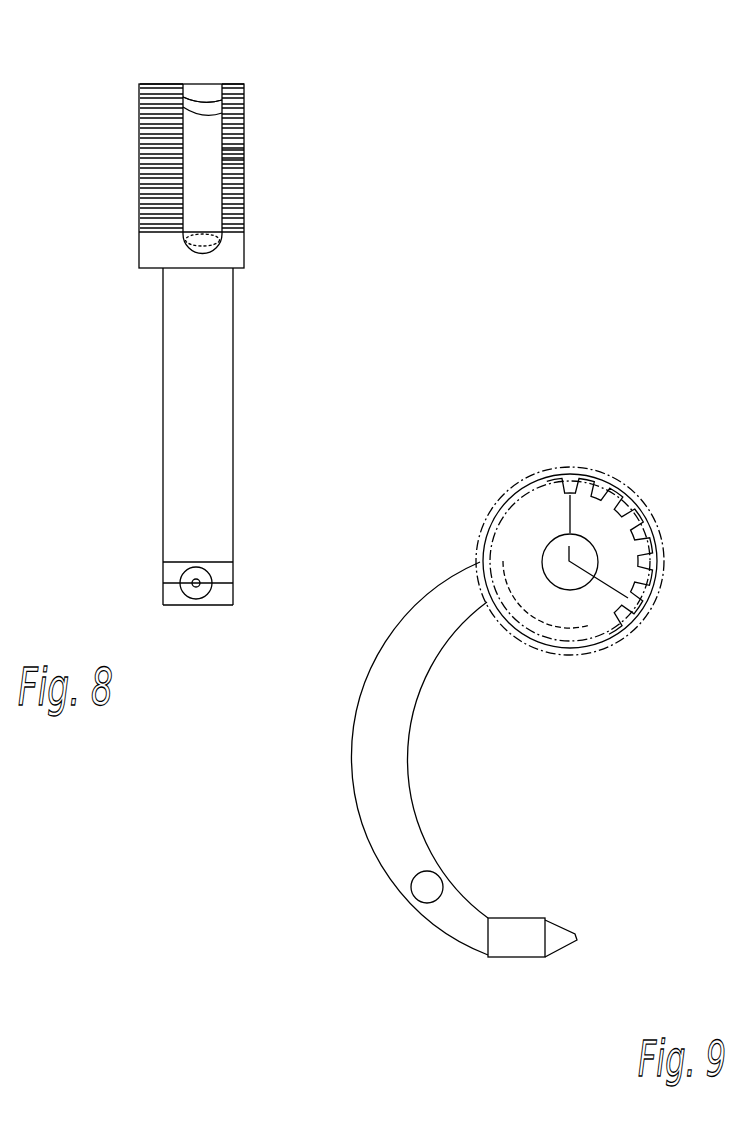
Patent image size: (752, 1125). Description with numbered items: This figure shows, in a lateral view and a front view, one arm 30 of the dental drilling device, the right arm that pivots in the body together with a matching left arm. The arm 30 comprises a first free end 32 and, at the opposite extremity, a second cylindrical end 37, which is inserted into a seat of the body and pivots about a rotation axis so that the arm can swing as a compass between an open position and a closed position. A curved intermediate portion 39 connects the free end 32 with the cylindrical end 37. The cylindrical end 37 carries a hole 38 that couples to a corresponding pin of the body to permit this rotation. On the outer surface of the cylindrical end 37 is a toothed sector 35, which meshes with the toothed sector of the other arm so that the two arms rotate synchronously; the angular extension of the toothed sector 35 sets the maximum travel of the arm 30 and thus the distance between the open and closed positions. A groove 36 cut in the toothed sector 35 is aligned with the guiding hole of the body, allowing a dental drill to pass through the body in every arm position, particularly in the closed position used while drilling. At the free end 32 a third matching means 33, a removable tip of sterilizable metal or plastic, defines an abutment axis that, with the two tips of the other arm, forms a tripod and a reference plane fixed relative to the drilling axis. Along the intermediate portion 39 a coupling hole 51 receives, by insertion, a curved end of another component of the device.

In FIG. 8, the right arm 30 is at (270, 312).
In FIG. 9, the right arm 30 is at (352, 790).
In FIG. 8, the free end 32 is at (163, 586).
In FIG. 9, the free end 32 is at (517, 942).
In FIG. 8, the third matching means 33 is at (197, 600).
In FIG. 9, the third matching means 33 is at (556, 937).
In FIG. 8, the toothed sector 35 is at (233, 163).
In FIG. 9, the toothed sector 35 is at (607, 485).
In FIG. 8, the groove 36 is at (210, 130).
In FIG. 8, the cylindrical end 37 is at (138, 183).
In FIG. 9, the cylindrical end 37 is at (567, 623).
In FIG. 9, the hole 38 is at (553, 562).
In FIG. 8, the curved intermediate portion 39 is at (235, 420).
In FIG. 9, the curved intermediate portion 39 is at (392, 722).
In FIG. 9, the coupling hole 51 is at (425, 885).